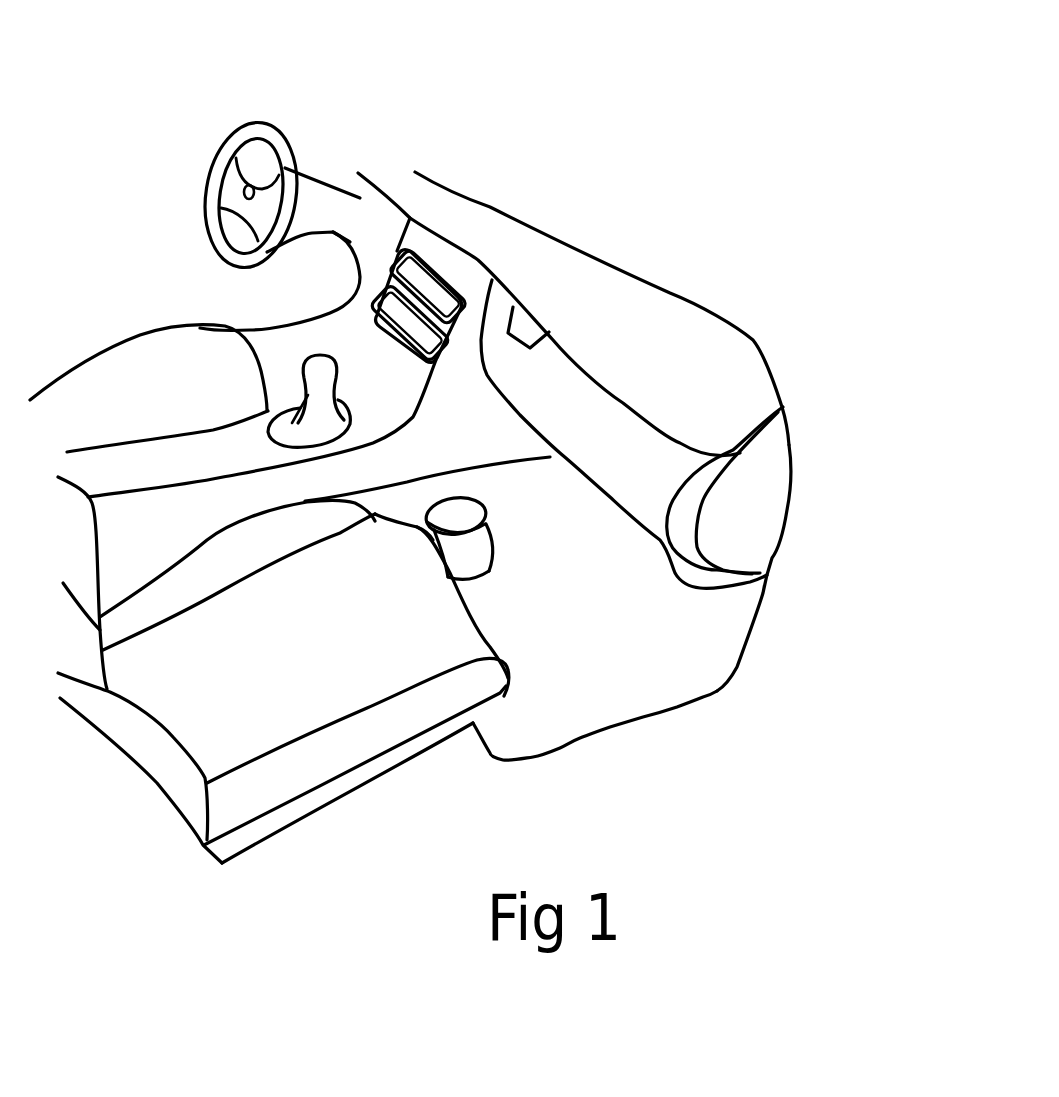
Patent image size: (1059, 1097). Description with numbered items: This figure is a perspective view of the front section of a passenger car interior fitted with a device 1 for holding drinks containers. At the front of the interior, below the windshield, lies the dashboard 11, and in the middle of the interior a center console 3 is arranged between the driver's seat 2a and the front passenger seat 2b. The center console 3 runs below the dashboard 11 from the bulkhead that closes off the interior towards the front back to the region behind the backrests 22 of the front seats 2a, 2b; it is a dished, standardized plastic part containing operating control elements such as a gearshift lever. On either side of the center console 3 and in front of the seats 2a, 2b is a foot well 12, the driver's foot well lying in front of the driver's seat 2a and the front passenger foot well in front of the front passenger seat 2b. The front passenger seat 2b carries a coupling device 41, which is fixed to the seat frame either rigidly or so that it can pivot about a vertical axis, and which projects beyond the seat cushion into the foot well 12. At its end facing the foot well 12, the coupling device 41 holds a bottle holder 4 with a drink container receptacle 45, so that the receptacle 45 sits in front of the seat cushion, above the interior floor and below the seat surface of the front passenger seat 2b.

The device for holding drinks containers 1 is at (672, 199).
The driver's seat 2a is at (143, 355).
The front passenger seat 2b is at (272, 728).
The center console 3 is at (213, 438).
The bottle holder 4 is at (490, 603).
The dashboard 11 is at (491, 240).
The foot well 12 is at (670, 660).
The backrests 22 is at (77, 653).
The coupling device 41 is at (416, 530).
The drink container receptacle 45 is at (476, 543).